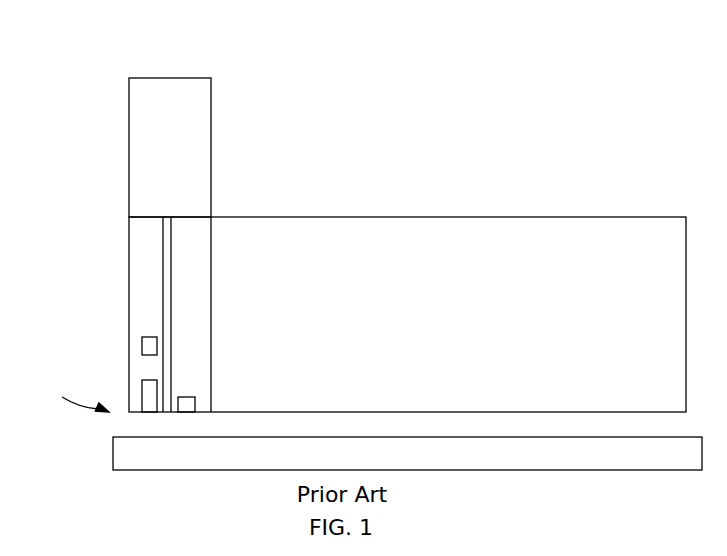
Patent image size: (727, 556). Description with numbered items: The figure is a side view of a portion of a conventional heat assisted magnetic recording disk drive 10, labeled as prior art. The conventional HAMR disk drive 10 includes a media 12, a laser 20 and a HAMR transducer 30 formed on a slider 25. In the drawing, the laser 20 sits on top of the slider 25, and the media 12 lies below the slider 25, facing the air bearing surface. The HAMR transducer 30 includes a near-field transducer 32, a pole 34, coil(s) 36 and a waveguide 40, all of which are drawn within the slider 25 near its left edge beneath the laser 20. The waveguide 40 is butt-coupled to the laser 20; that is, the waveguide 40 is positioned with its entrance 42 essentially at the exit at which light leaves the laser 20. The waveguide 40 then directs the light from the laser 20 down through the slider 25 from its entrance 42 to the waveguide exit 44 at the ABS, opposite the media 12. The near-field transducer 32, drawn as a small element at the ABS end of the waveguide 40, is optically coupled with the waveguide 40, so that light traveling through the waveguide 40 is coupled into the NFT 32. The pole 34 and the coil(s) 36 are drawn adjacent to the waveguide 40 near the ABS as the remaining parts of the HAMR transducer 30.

The HAMR disk drive 10 is at (356, 30).
The laser 20 is at (178, 77).
The slider 25 is at (530, 217).
The HAMR transducer 30 is at (211, 240).
The near-field transducer (NFT) 32 is at (195, 397).
The pole 34 is at (142, 380).
The coil(s) 36 is at (141, 337).
The waveguide 40 is at (163, 302).
The waveguide entrance 42 is at (152, 230).
The waveguide exit 44 is at (155, 420).
The media 12 is at (113, 450).